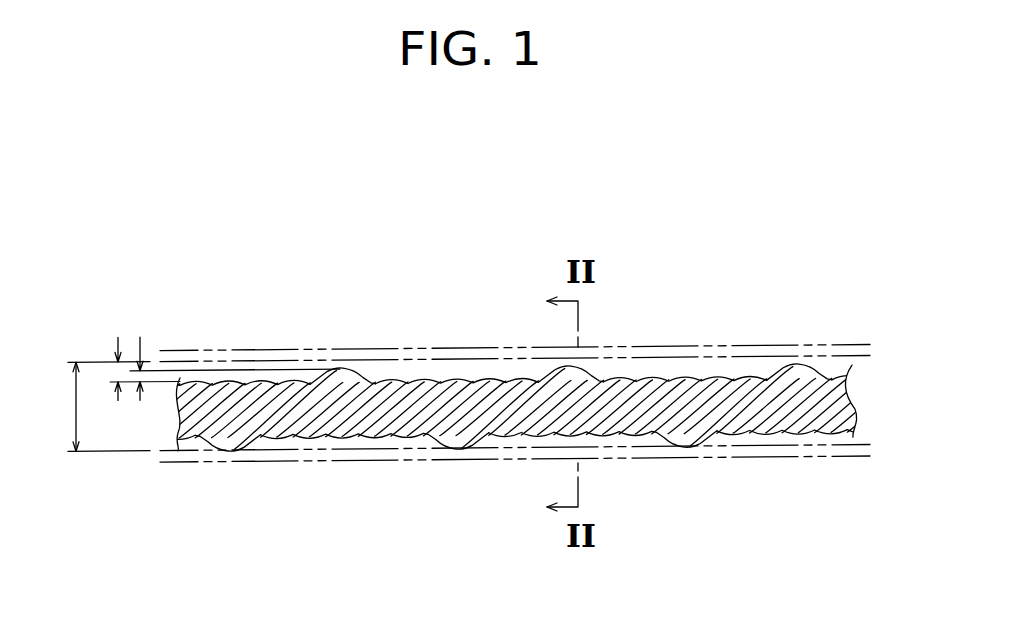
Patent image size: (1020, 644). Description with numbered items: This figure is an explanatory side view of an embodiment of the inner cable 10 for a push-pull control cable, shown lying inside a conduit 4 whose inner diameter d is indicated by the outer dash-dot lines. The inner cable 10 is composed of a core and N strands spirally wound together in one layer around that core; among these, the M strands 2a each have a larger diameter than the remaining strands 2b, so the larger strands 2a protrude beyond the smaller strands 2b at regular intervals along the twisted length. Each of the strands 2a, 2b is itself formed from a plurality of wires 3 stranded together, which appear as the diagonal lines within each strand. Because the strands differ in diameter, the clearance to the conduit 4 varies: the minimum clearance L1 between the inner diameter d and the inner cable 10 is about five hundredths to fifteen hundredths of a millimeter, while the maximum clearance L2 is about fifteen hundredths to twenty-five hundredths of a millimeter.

The inner cable 10 is at (515, 379).
The strands 2a is at (803, 373).
The strands 2b is at (717, 383).
The wires 3 is at (697, 436).
The conduit 4 is at (385, 356).
The minimum clearance L1 is at (139, 370).
The maximum clearance L2 is at (117, 370).
The inner diameter d is at (109, 407).